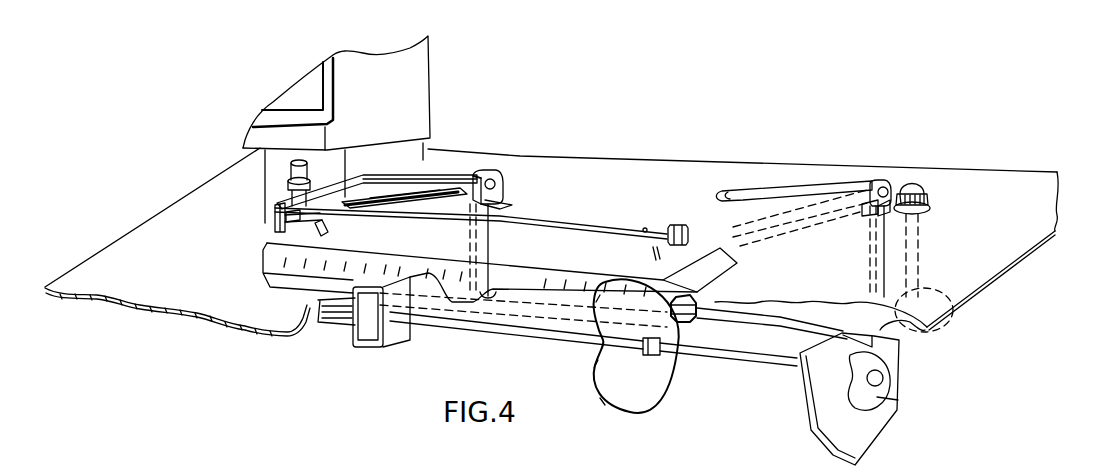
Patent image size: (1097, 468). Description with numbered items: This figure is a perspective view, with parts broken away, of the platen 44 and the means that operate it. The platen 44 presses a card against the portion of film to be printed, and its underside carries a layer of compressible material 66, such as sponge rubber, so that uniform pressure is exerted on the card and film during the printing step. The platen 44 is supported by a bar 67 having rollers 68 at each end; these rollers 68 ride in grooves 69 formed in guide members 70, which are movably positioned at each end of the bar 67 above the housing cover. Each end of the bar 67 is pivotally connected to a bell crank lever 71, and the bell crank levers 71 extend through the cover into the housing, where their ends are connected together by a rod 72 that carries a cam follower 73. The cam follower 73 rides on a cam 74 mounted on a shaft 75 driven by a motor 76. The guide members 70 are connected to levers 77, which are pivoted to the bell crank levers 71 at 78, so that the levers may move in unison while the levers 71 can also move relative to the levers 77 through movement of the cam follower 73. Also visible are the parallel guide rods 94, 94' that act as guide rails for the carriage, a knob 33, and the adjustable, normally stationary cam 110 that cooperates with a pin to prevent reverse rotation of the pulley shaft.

The knob 33 is at (927, 190).
The platen 44 is at (738, 266).
The layer of compressible material 66 is at (295, 292).
The bar 67 is at (558, 222).
The rollers 68 is at (275, 223).
The grooves 69 is at (285, 225).
The guide members 70 is at (275, 210).
The bell crank lever 71 is at (447, 175).
The rod 72 is at (728, 317).
The cam follower 73 is at (687, 323).
The cam 74 is at (658, 377).
The shaft 75 is at (480, 333).
The motor 76 is at (370, 320).
The levers 77 is at (405, 200).
The pivot 78 is at (887, 197).
The parallel rods 94 is at (494, 215).
The hinge 94' is at (876, 222).
The adjustable stationary cam 110 is at (917, 335).